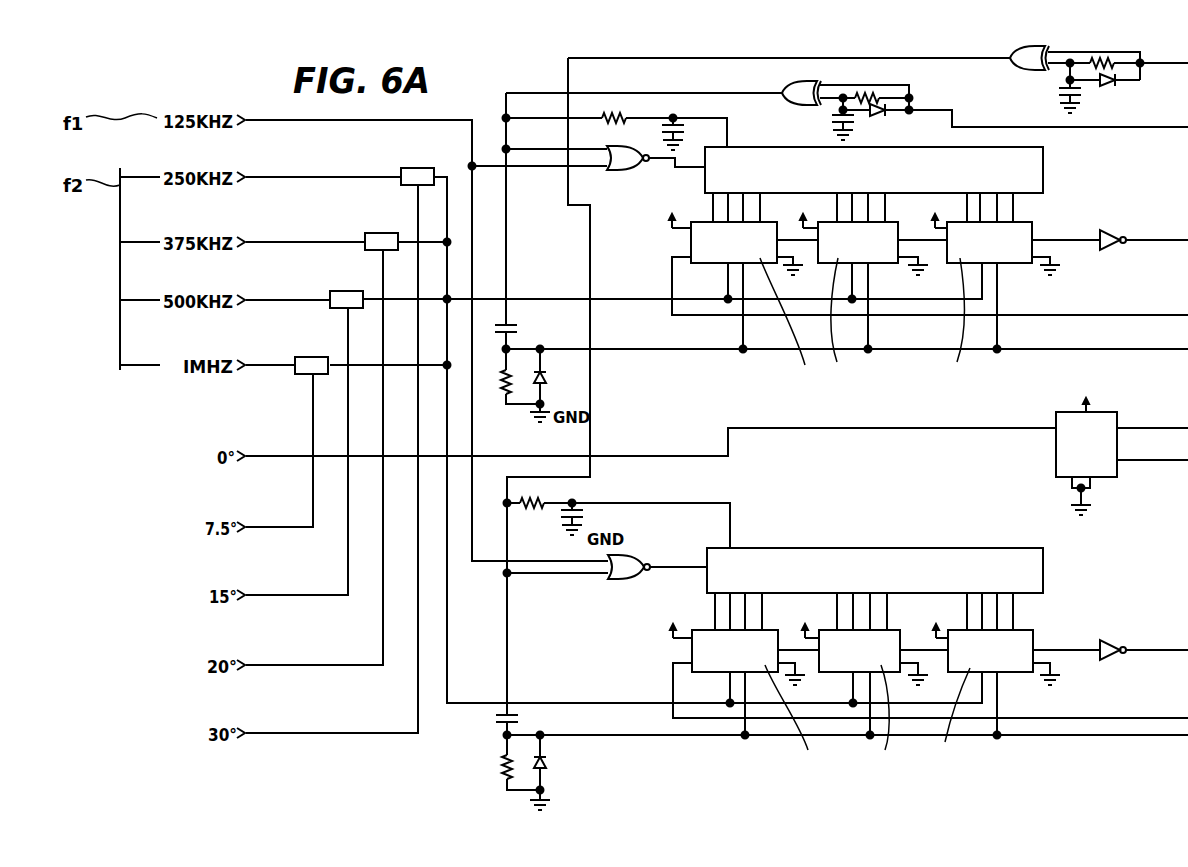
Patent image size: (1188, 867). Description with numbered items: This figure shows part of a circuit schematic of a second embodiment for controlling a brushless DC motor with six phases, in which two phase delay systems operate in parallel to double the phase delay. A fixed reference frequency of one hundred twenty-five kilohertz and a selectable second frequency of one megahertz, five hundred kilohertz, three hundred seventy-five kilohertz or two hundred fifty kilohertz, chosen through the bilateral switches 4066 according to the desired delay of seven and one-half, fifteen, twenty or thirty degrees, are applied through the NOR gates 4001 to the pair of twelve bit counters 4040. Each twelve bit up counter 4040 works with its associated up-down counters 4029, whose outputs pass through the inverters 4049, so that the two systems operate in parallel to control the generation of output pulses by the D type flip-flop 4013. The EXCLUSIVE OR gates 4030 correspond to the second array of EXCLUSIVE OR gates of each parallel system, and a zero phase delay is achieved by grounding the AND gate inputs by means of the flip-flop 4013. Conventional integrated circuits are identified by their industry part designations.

The bilateral switch 4066 is at (364, 262).
The NOR gate 4001 is at (606, 375).
The 12 bit counter 4040 is at (894, 362).
The up-down counter 4029 is at (928, 480).
The inverter 4049 is at (1142, 437).
The EXCLUSIVE OR gate 4030 is at (972, 93).
The D type flip-flop 4013 is at (1122, 456).